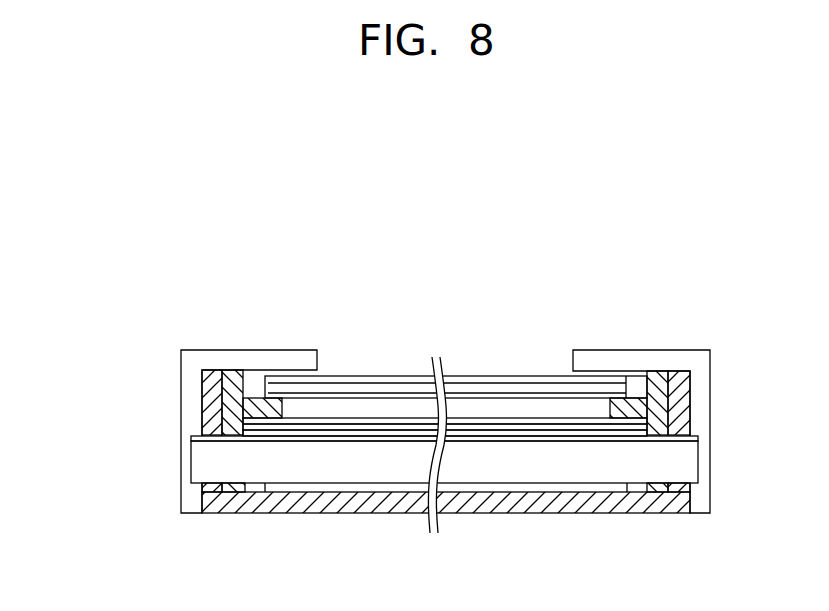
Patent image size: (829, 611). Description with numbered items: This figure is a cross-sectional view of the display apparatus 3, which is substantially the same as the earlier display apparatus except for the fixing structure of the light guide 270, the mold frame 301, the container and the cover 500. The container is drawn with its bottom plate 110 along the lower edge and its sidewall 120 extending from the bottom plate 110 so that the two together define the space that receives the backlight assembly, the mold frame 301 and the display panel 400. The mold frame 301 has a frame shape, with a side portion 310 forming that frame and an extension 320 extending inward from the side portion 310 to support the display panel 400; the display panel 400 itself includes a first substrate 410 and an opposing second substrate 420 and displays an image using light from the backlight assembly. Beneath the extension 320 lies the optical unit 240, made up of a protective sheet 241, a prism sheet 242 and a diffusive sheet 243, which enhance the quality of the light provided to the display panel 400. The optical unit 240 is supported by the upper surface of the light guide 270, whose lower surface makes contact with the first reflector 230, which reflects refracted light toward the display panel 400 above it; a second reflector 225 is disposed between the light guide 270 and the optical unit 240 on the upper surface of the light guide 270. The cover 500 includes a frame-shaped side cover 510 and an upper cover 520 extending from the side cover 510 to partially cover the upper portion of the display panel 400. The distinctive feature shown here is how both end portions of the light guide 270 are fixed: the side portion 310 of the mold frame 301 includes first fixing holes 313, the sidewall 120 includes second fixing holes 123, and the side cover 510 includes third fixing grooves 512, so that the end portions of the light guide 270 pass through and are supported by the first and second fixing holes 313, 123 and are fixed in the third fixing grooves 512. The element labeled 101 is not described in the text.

The display apparatus 3 is at (402, 222).
The display panel 101 is at (103, 432).
The bottom plate 110 is at (244, 510).
The sidewall 120 is at (212, 397).
The second fixing holes 123 is at (209, 485).
The second reflector 225 is at (700, 437).
The first reflector 230 is at (327, 487).
The optical unit 240 is at (577, 295).
The protective sheet 241 is at (465, 418).
The prism sheet 242 is at (508, 426).
The diffusive sheet 243 is at (553, 433).
The light guide 270 is at (375, 468).
The mold frame 301 is at (342, 289).
The side portion 310 is at (229, 375).
The first fixing holes 313 is at (264, 402).
The extension 320 is at (282, 380).
The display panel 400 is at (675, 297).
The first substrate 410 is at (620, 390).
The second substrate 420 is at (590, 383).
The cover 500 is at (103, 325).
The side cover 510 is at (181, 369).
The third fixing grooves 512 is at (187, 452).
The upper cover 520 is at (201, 350).